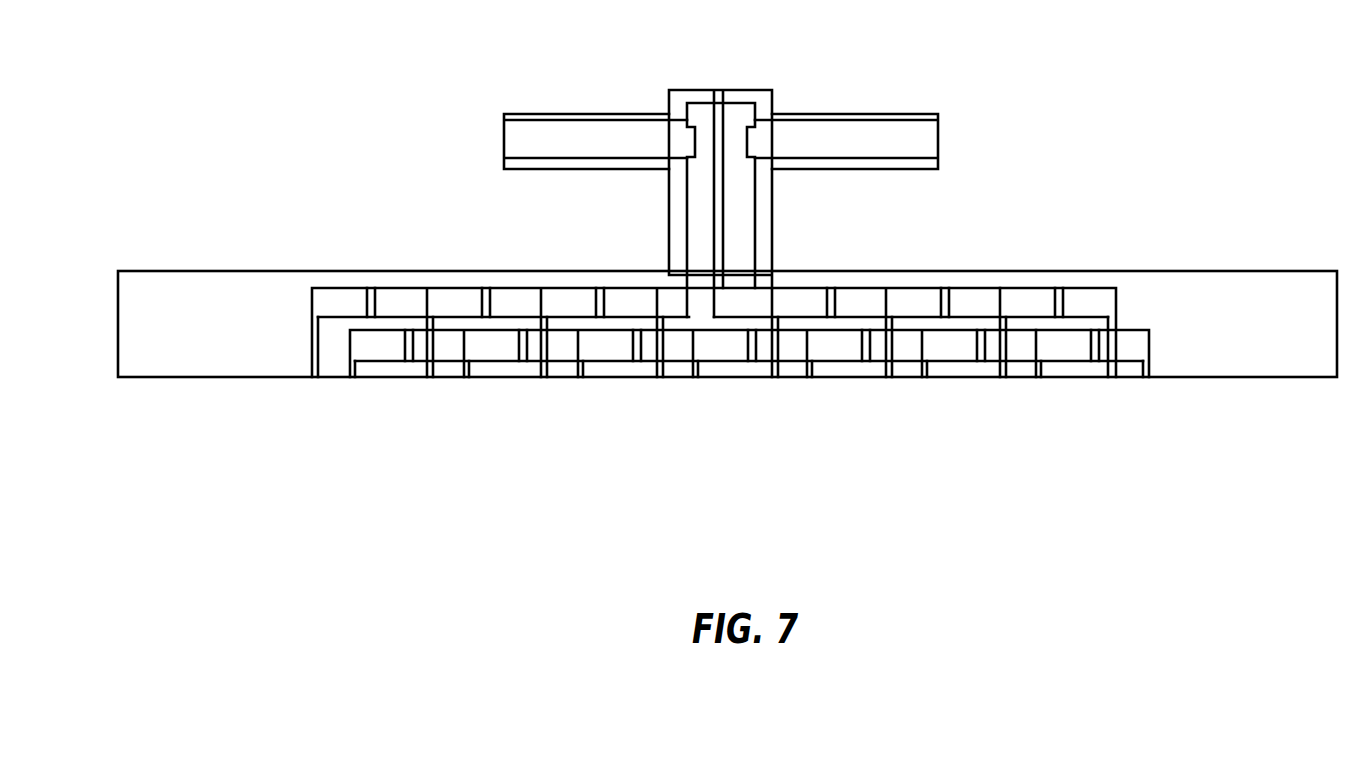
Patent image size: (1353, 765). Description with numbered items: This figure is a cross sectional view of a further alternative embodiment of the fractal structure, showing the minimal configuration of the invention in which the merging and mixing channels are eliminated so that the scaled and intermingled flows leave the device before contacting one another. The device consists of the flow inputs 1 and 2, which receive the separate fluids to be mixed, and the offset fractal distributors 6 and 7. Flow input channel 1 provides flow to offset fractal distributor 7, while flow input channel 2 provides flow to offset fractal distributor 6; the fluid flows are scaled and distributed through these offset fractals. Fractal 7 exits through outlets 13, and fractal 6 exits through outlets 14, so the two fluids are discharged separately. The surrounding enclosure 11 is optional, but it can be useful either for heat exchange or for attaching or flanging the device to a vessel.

The flow input channel 1 is at (570, 113).
The flow input channel 2 is at (870, 113).
The offset fractal distributor 6 is at (1117, 303).
The offset fractal distributor 7 is at (1150, 343).
The enclosure 11 is at (211, 271).
The outlets 13 is at (1038, 377).
The outlets 14 is at (1000, 377).